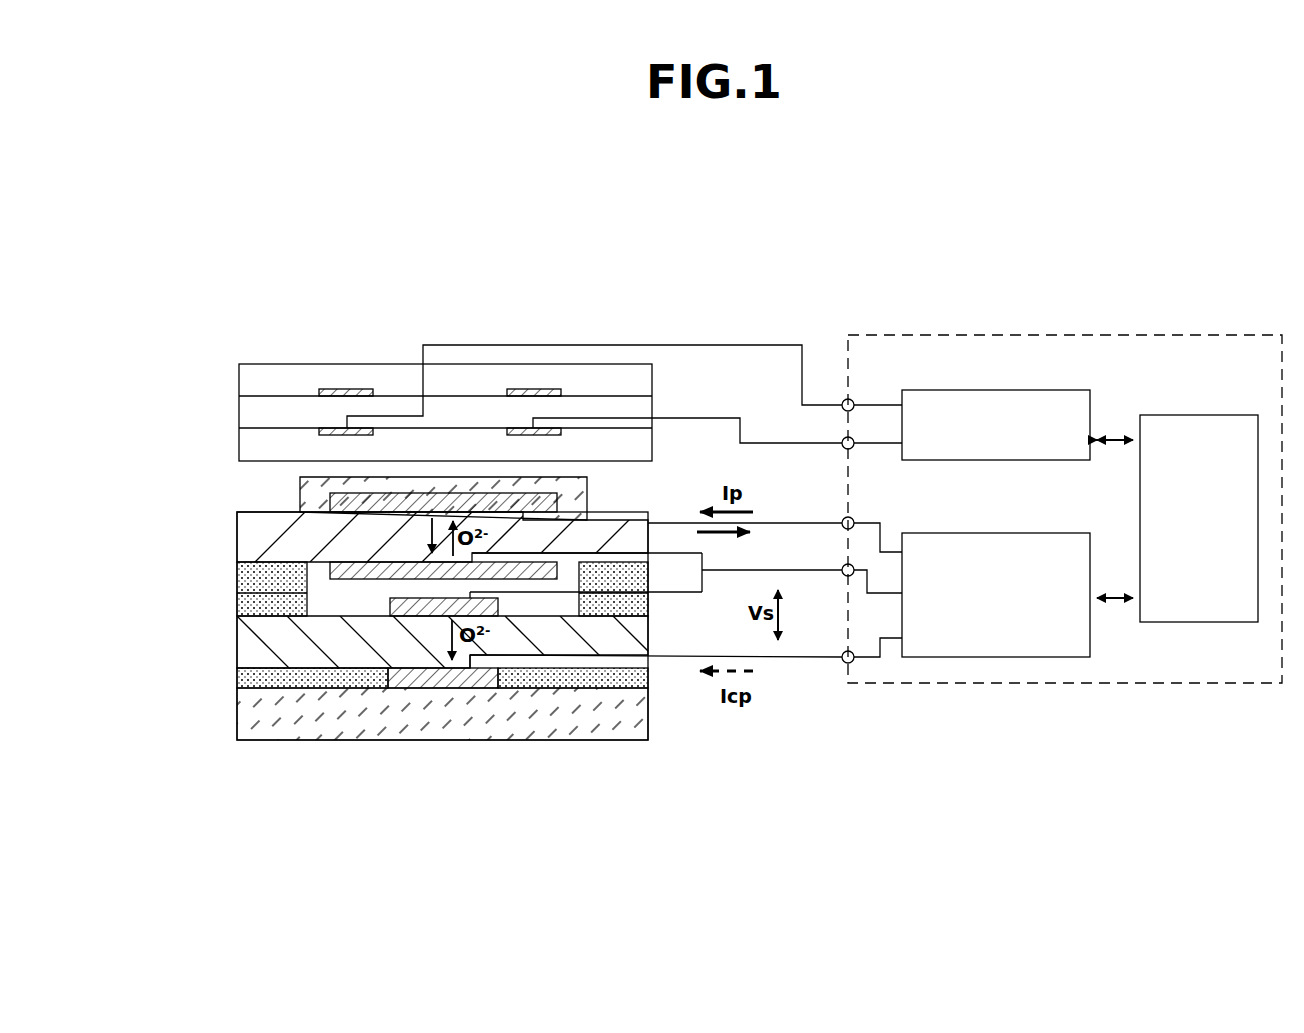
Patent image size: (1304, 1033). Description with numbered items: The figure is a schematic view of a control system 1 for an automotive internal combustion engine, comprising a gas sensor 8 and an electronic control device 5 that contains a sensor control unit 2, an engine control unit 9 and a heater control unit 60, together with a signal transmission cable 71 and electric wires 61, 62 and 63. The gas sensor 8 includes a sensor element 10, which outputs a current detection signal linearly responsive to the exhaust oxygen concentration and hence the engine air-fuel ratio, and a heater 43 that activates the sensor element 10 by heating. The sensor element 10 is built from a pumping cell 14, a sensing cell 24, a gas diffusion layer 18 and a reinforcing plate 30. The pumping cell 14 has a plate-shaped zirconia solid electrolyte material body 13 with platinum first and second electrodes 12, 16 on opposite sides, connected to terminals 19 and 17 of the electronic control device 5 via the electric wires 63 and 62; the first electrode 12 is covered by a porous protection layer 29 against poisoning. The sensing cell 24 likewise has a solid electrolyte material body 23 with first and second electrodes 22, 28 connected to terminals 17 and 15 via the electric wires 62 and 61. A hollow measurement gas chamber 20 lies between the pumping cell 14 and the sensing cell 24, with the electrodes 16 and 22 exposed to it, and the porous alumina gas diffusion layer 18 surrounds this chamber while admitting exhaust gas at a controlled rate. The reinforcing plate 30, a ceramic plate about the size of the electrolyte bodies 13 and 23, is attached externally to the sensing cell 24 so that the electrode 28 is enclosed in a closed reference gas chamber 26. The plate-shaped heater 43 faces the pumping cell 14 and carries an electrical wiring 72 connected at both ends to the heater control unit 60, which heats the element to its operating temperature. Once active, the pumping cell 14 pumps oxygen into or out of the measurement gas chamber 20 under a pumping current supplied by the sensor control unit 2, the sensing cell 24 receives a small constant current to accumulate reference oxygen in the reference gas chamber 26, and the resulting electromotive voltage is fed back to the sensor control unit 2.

The control system 1 is at (884, 288).
The sensor control unit 2 is at (990, 533).
The electronic control device 5 is at (1068, 335).
The gas sensor 8 is at (168, 304).
The engine control unit 9 is at (1195, 415).
The sensor element 10 is at (196, 440).
The first pumping cell electrode 12 is at (336, 508).
The solid electrolyte material body 13 is at (257, 528).
The pumping cell 14 is at (411, 523).
The terminal 15 is at (843, 663).
The second pumping cell electrode 16 is at (352, 565).
The terminal 17 is at (843, 576).
The gas diffusion layer 18 is at (264, 578).
The terminal 19 is at (843, 518).
The measurement gas chamber 20 is at (324, 592).
The first sensing cell electrode 22 is at (392, 608).
The solid electrolyte material body 23 is at (250, 650).
The sensing cell 24 is at (395, 644).
The reference gas chamber 26 is at (497, 669).
The second sensing cell electrode 28 is at (390, 678).
The porous protection layer 29 is at (587, 495).
The reinforcing plate 30 is at (237, 713).
The heater 43 is at (290, 364).
The heater control unit 60 is at (990, 390).
The electric wire 61 is at (786, 660).
The electric wire 62 is at (740, 570).
The electric wire 63 is at (786, 522).
The signal transmission cable 71 is at (1115, 602).
The electrical wiring 72 is at (533, 436).